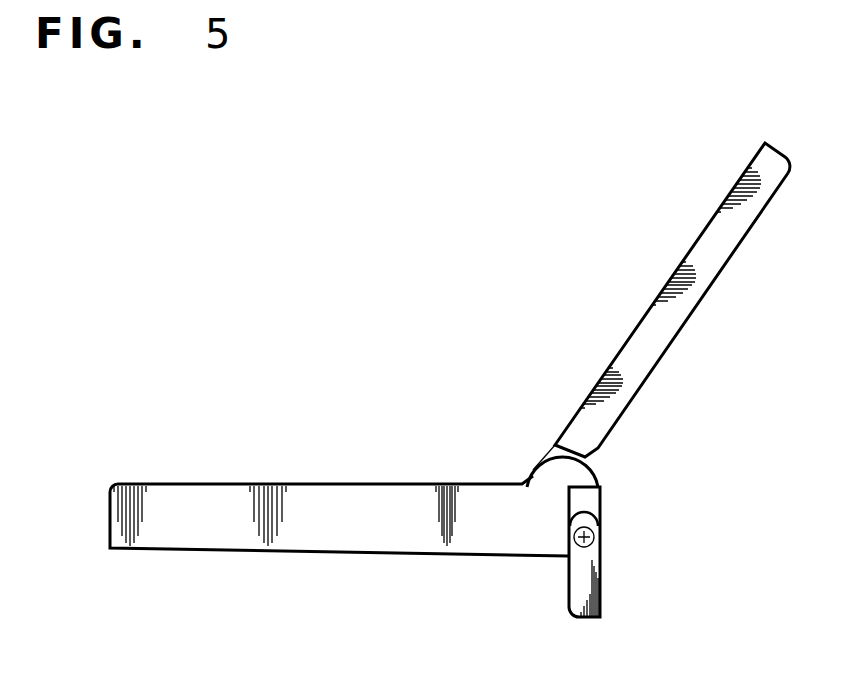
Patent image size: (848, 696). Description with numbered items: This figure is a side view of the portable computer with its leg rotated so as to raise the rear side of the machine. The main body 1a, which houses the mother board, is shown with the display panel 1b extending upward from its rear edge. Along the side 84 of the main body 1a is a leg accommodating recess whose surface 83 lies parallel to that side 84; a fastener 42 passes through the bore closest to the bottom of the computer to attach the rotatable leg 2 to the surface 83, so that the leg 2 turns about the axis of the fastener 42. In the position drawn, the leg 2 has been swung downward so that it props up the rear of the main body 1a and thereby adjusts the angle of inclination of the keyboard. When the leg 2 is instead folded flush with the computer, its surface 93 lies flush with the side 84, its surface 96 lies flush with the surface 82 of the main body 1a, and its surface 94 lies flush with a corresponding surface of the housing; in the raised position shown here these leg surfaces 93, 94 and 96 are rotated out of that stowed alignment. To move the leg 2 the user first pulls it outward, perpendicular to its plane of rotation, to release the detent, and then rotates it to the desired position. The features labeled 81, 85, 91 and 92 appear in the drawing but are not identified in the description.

The main body 1a is at (203, 482).
The display panel 1b is at (718, 227).
The rotatable leg 2 is at (603, 587).
The fastener 42 is at (602, 530).
The hinge shaft 81 is at (600, 472).
The surface of the laptop 82 is at (335, 553).
The surface of the leg accommodating recess 83 is at (585, 505).
The side of the portable computer 84 is at (287, 525).
The hinge barrel 85 is at (536, 471).
The lower end 91 is at (592, 618).
The outer surface 92 is at (603, 562).
The surface of the leg 93 is at (582, 570).
The surface of the leg 94 is at (565, 595).
The surface of the leg 96 is at (568, 528).